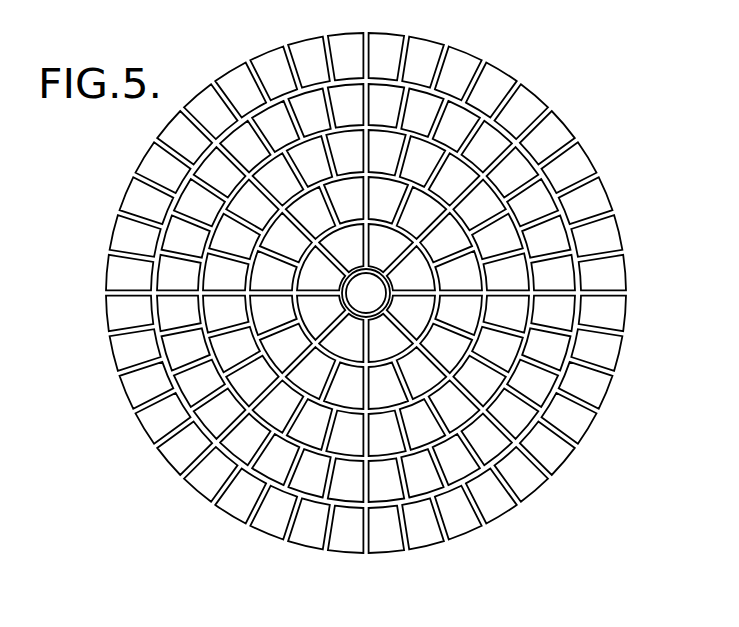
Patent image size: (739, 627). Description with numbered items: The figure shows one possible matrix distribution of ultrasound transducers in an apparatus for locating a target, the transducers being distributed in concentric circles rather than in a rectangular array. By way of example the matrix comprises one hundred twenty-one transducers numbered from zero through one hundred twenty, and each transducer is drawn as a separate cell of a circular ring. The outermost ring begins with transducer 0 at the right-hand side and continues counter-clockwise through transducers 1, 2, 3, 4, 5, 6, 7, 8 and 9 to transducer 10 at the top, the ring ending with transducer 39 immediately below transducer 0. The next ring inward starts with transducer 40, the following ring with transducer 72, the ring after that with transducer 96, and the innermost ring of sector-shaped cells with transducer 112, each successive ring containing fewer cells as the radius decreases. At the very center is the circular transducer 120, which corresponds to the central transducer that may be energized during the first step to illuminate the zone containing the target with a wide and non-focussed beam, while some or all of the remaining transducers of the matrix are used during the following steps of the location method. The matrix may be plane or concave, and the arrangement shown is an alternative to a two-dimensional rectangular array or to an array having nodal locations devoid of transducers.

The transducer 0 is at (602, 273).
The transducer 1 is at (596, 236).
The transducer 2 is at (586, 200).
The transducer 3 is at (569, 167).
The transducer 4 is at (547, 138).
The transducer 5 is at (522, 111).
The transducer 6 is at (491, 90).
The transducer 7 is at (458, 74).
The transducer 8 is at (423, 62).
The transducer 9 is at (387, 56).
The transducer 10 is at (346, 56).
The transducer 39 is at (602, 314).
The transducer 40 is at (553, 273).
The transducer 72 is at (507, 271).
The transducer 96 is at (458, 270).
The transducer 112 is at (411, 268).
The transducer 120 is at (366, 293).